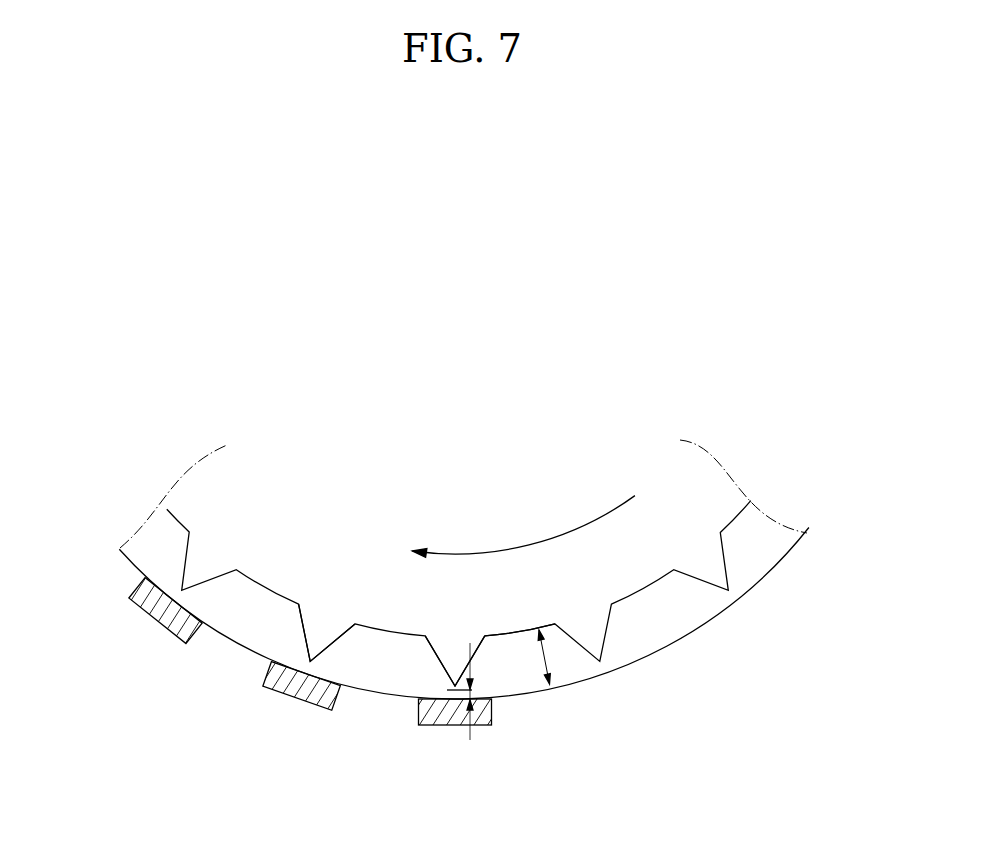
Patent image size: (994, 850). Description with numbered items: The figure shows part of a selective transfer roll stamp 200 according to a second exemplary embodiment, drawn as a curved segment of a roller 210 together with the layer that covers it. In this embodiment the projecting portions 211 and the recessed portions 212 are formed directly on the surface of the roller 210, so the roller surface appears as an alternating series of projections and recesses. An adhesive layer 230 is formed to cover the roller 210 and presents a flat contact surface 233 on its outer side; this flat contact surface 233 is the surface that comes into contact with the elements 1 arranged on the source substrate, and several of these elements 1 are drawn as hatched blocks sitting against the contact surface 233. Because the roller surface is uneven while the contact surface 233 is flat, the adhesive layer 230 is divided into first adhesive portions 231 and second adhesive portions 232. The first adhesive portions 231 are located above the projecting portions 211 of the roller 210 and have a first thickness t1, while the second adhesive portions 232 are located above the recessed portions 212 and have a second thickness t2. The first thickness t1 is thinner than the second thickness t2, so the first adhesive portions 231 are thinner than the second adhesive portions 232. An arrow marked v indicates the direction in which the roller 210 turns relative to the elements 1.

The selective transfer roll stamp 200 is at (635, 393).
The roller 210 is at (707, 490).
The recessed portions 212 is at (630, 597).
The projecting portions 211 is at (327, 632).
The adhesive layer 230 is at (750, 543).
The first adhesive portions 231 is at (462, 692).
The second adhesive portions 232 is at (521, 669).
The flat contact surface 233 is at (715, 613).
The elements 1 is at (168, 622).
The first thickness t1 is at (478, 692).
The second thickness t2 is at (546, 661).
The moving direction v is at (531, 546).